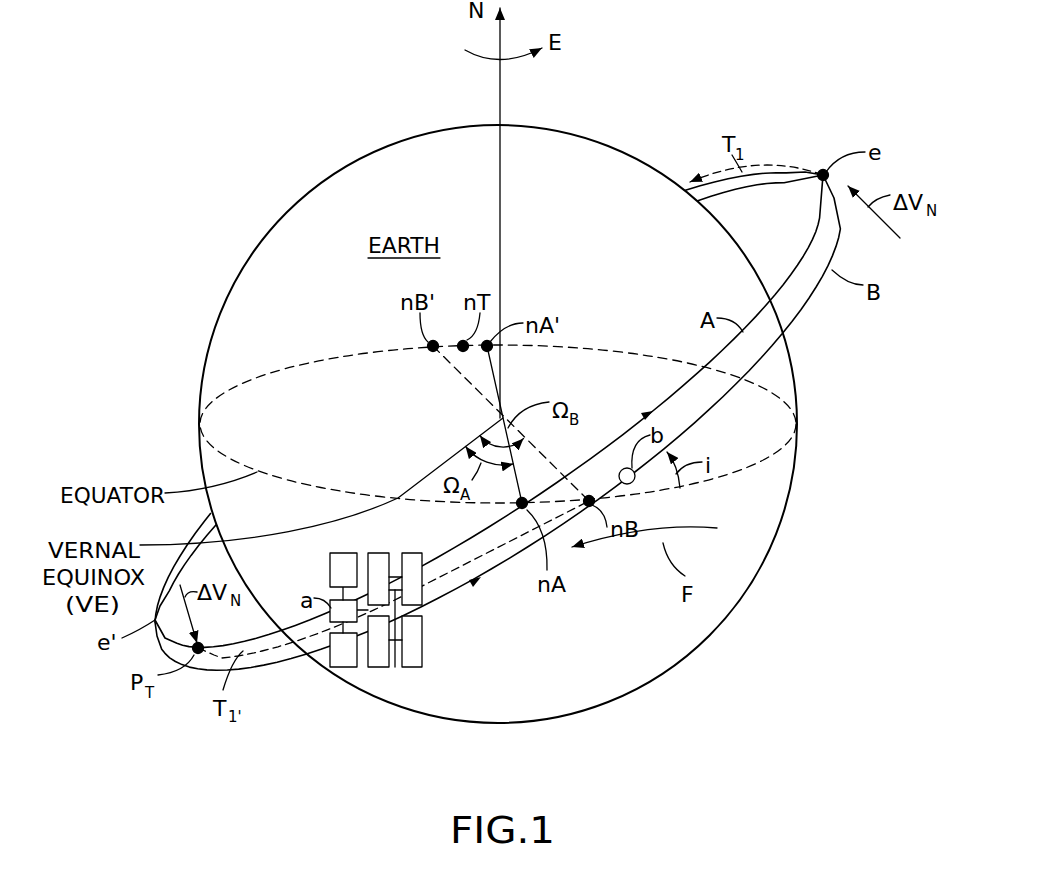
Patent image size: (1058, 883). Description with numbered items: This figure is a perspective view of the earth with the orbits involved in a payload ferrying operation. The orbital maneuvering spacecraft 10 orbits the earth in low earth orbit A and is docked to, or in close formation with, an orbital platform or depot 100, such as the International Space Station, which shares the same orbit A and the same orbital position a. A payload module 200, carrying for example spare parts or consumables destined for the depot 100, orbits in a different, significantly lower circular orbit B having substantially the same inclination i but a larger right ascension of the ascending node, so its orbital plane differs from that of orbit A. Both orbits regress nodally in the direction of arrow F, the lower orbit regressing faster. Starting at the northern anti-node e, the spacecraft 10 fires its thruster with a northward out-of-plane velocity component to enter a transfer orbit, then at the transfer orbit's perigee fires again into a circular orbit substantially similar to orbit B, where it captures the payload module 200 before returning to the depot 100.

The orbital maneuvering spacecraft 10 is at (340, 572).
The orbital platform or depot 100 is at (361, 591).
The payload module 200 is at (636, 484).